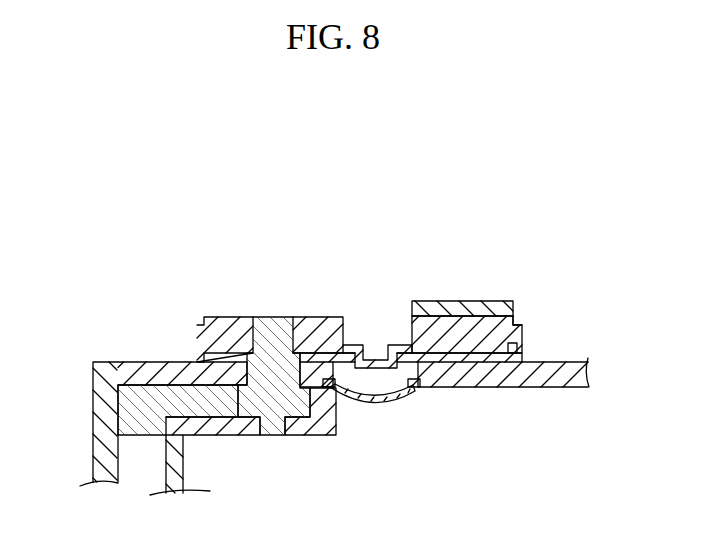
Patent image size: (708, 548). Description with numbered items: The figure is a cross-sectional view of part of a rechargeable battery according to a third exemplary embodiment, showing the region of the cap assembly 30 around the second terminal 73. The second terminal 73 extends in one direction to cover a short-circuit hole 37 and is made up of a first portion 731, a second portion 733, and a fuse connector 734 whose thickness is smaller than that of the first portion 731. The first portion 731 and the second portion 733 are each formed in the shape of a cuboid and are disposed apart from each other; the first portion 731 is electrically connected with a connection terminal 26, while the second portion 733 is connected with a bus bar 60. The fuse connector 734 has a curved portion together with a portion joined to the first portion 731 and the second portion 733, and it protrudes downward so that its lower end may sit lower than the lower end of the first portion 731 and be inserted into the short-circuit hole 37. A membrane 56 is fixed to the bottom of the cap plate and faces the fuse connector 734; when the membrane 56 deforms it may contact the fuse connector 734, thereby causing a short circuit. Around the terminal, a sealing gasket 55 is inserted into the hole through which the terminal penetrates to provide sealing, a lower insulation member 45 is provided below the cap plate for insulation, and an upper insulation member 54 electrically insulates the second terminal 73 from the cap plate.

The connection terminal 26 is at (272, 333).
The cap assembly 30 is at (562, 361).
The short-circuit hole 37 is at (413, 391).
The lower insulation member 45 is at (137, 409).
The upper insulation member 54 is at (522, 326).
The sealing gasket 55 is at (195, 372).
The membrane 56 is at (373, 403).
The bus bar 60 is at (483, 312).
The second terminal 73 is at (358, 295).
The first portion 731 is at (317, 335).
The second portion 733 is at (424, 335).
The fuse connector 734 is at (380, 362).